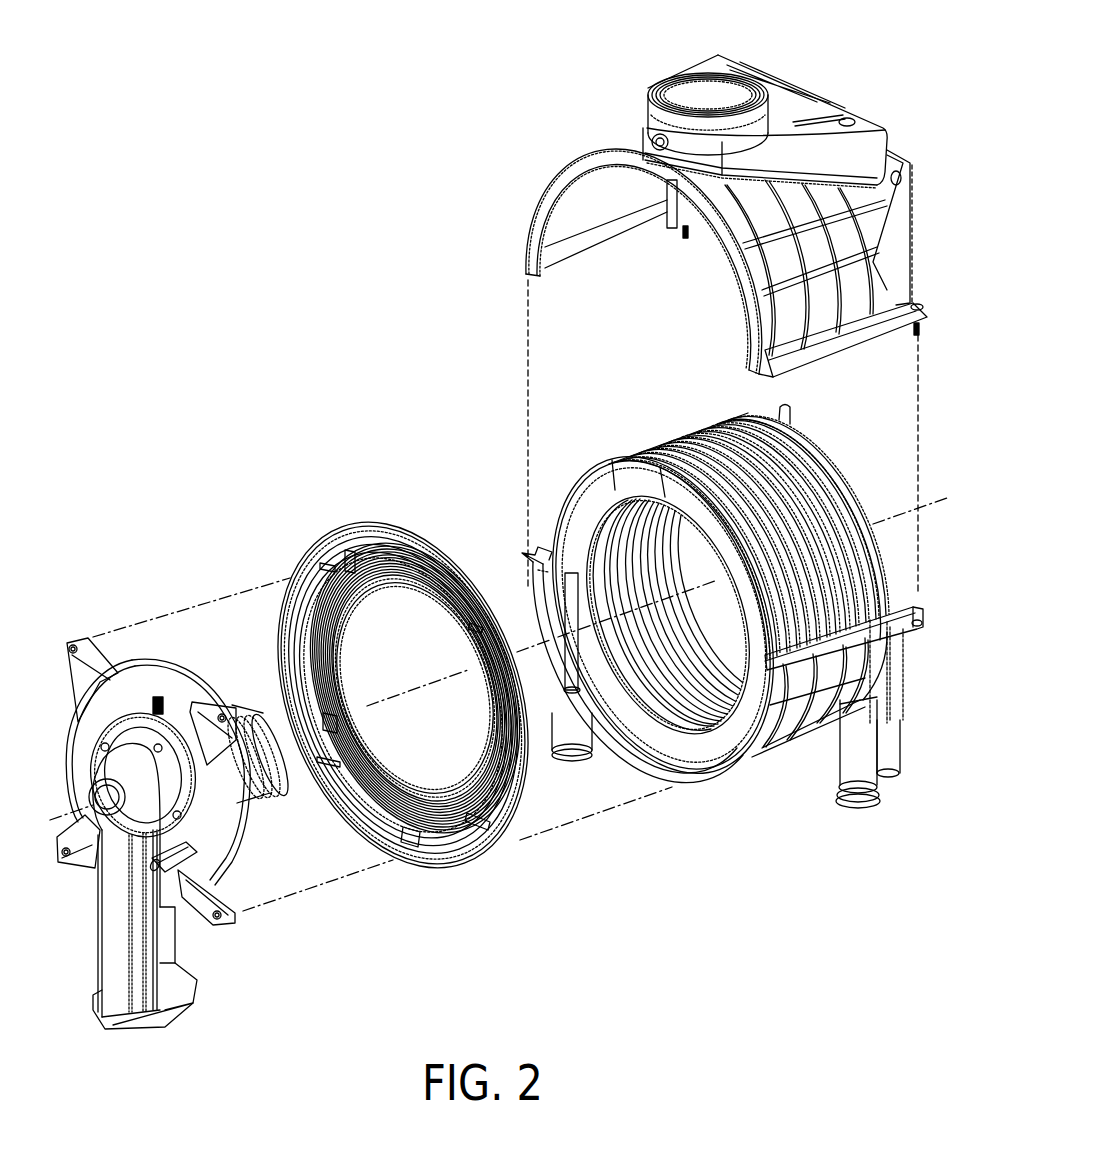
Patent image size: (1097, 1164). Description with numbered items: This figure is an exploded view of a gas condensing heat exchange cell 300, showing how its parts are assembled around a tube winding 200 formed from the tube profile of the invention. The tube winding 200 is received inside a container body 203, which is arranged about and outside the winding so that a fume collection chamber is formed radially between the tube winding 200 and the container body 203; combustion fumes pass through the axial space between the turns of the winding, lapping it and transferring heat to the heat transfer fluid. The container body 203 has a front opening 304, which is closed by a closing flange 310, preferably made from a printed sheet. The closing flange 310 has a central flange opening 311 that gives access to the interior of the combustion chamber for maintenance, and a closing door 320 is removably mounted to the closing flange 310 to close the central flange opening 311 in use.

The tube winding 200 is at (603, 440).
The container body 203 is at (913, 233).
The gas condensing heat exchange cell 300 is at (517, 167).
The front opening 304 is at (532, 232).
The closing flange 310 is at (329, 529).
The central flange opening 311 is at (400, 590).
The closing door 320 is at (146, 640).